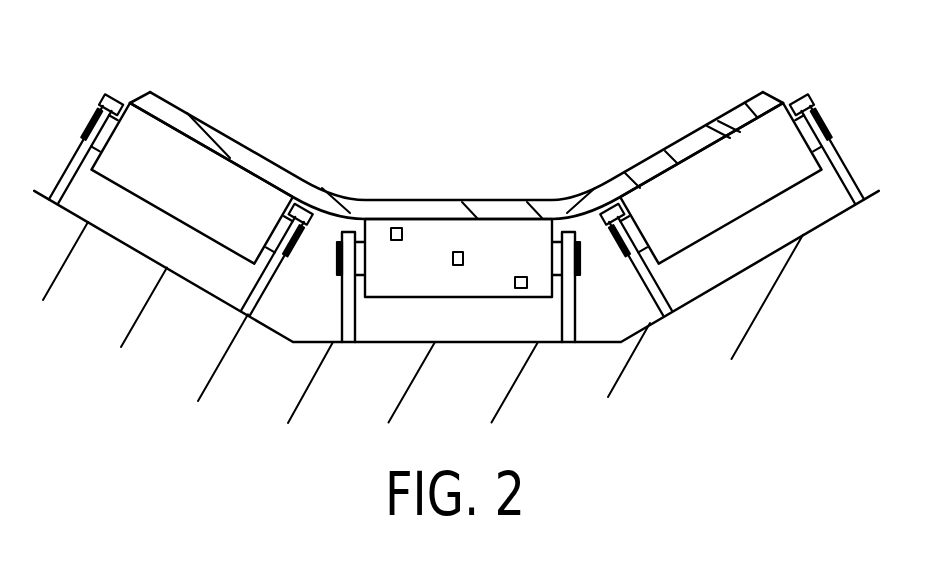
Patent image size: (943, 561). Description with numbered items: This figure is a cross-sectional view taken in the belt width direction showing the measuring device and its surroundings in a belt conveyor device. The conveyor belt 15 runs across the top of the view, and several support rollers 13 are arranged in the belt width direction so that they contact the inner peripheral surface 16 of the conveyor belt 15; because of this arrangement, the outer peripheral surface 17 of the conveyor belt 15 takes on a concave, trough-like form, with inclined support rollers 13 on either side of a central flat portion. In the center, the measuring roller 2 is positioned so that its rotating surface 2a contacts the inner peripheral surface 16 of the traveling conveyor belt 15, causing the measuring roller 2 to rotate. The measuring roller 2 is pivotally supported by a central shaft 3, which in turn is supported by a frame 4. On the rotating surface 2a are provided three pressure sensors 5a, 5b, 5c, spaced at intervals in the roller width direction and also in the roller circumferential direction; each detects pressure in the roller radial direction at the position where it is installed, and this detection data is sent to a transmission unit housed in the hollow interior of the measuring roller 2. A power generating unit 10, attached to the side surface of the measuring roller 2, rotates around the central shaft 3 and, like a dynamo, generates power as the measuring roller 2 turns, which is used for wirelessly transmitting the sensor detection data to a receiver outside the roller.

The measuring roller 2 is at (444, 223).
The rotating surface 2a is at (492, 230).
The central shaft 3 is at (580, 266).
The frame 4 is at (354, 318).
The pressure sensor 5a is at (395, 227).
The pressure sensor 5b is at (461, 268).
The pressure sensor 5c is at (519, 276).
The power generating unit 10 is at (359, 231).
The support roller 13 is at (165, 121).
The conveyor belt 15 is at (302, 176).
The inner peripheral surface 16 is at (333, 205).
The outer peripheral surface 17 is at (611, 178).